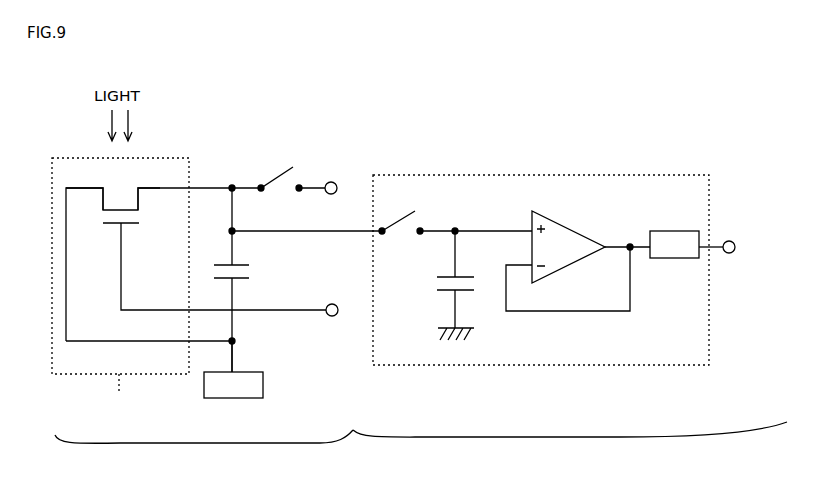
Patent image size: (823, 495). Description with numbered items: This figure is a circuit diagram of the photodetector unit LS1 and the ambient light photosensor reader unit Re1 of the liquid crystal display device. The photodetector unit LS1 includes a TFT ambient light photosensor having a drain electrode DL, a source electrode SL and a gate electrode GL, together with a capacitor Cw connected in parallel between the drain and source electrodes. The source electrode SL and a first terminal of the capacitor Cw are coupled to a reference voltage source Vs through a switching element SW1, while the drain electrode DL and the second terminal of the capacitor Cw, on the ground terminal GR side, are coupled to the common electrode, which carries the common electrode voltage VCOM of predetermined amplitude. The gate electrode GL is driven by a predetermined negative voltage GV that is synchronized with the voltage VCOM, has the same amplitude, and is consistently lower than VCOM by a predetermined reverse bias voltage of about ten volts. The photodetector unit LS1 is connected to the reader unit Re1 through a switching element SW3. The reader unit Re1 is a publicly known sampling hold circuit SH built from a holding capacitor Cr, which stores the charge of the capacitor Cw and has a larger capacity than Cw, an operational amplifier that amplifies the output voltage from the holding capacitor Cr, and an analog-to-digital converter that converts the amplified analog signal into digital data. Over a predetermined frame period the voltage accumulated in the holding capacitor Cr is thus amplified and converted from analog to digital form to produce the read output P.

The photodetector unit LS1 is at (192, 298).
The ambient light photosensor reader unit Re1 is at (570, 307).
The drain electrode DL is at (84, 199).
The source electrode SL is at (149, 199).
The gate electrode GL is at (214, 266).
The capacitor Cw is at (243, 273).
The holding capacitor Cr is at (443, 285).
The switching element SW1 is at (278, 160).
The switching element SW3 is at (455, 212).
The reference voltage source Vs is at (329, 175).
The negative voltage GV is at (332, 325).
The ground terminal GR is at (234, 352).
The common electrode voltage VCOM is at (233, 385).
The sampling hold circuit SH is at (580, 173).
The read output P is at (724, 248).